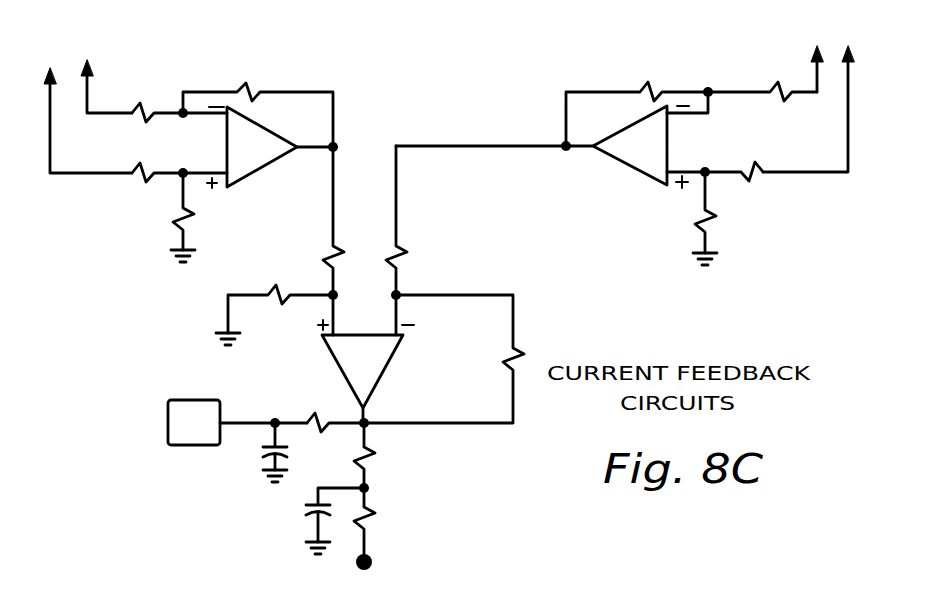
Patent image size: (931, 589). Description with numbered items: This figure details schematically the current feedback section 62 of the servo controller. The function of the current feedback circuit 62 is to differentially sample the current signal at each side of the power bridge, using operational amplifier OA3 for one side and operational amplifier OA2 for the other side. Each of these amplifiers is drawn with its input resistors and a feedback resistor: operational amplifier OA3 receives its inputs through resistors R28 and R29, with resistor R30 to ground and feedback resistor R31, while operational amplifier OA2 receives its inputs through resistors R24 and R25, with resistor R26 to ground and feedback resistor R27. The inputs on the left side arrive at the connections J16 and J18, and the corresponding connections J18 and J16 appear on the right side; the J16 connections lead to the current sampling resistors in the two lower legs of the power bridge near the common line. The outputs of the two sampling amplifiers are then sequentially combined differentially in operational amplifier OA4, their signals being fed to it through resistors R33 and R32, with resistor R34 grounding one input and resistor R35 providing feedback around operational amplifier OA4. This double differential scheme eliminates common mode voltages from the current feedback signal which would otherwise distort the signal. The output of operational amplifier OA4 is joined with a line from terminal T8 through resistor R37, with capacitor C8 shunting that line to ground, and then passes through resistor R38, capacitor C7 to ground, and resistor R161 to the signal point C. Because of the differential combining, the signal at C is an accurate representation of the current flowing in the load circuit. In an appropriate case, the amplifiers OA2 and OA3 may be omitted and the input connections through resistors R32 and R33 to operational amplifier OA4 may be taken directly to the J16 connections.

The operational amplifier OA3 is at (270, 147).
The operational amplifier OA2 is at (542, 147).
The operational amplifier OA4 is at (366, 371).
The J16 connections J16 is at (454, 99).
The junction terminal J18 is at (454, 69).
The resistor R24 is at (779, 83).
The resistor R25 is at (755, 162).
The resistor R26 is at (716, 218).
The resistor R27 is at (648, 83).
The resistor R28 is at (149, 95).
The resistor R29 is at (141, 164).
The resistor R30 is at (172, 222).
The resistor R31 is at (247, 84).
The resistor R32 is at (405, 252).
The resistor R33 is at (332, 250).
The resistor R34 is at (277, 285).
The resistor R35 is at (522, 352).
The resistor R37 is at (316, 414).
The resistor R38 is at (375, 456).
The resistor R161 is at (376, 515).
The capacitor C7 is at (309, 500).
The capacitor C8 is at (266, 442).
The signal point C is at (369, 568).
The terminal block T8 is at (237, 422).
The current feedback section 62 is at (528, 271).